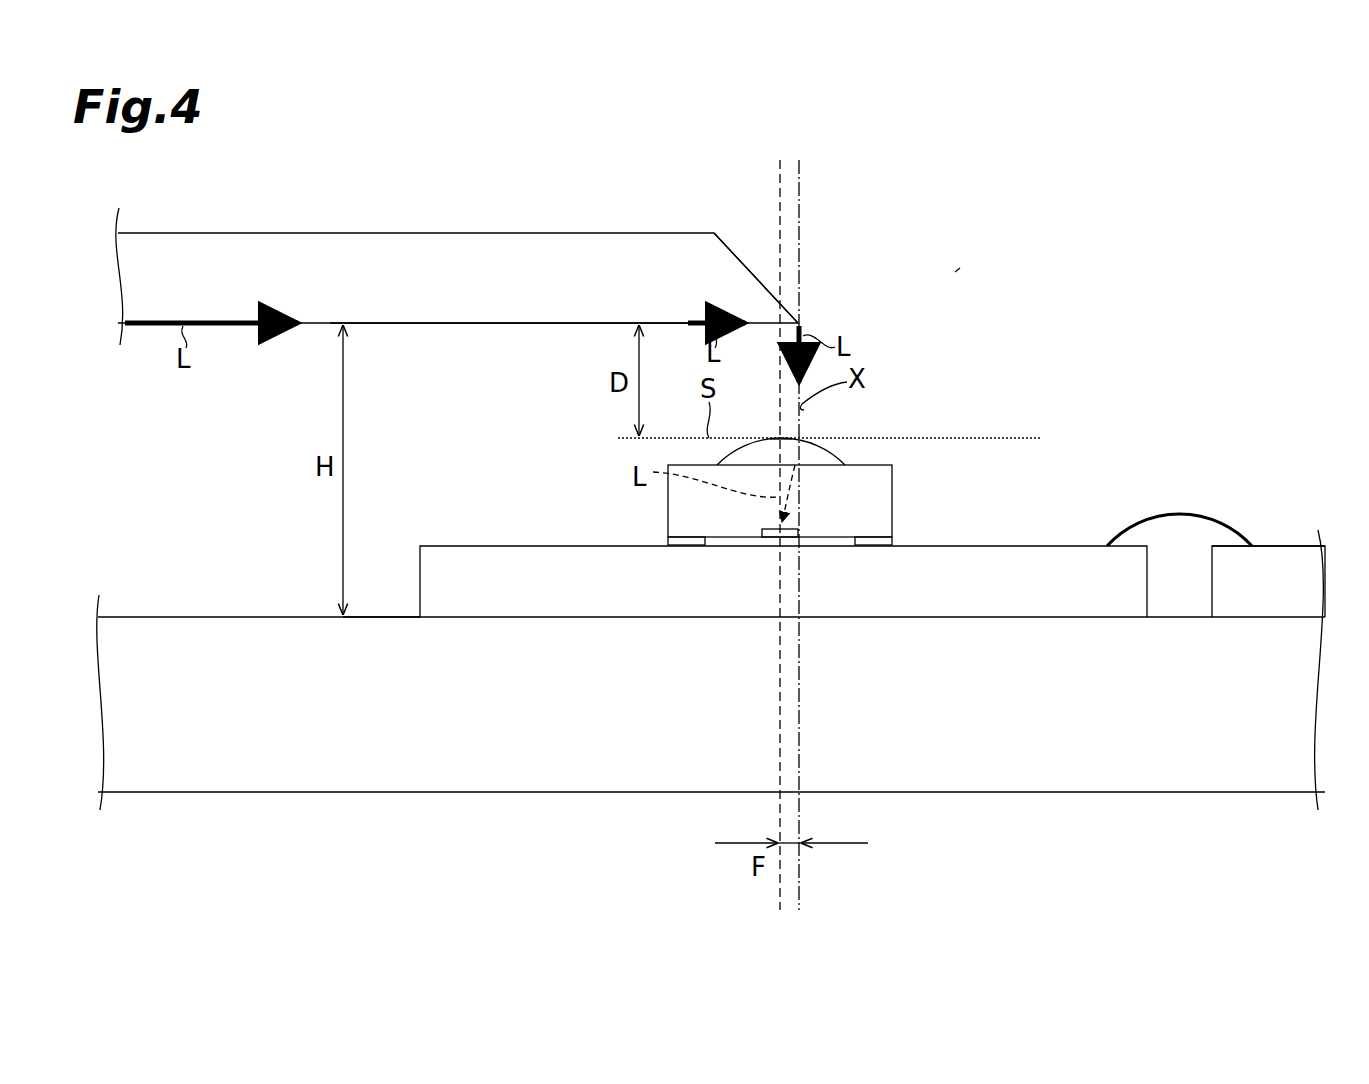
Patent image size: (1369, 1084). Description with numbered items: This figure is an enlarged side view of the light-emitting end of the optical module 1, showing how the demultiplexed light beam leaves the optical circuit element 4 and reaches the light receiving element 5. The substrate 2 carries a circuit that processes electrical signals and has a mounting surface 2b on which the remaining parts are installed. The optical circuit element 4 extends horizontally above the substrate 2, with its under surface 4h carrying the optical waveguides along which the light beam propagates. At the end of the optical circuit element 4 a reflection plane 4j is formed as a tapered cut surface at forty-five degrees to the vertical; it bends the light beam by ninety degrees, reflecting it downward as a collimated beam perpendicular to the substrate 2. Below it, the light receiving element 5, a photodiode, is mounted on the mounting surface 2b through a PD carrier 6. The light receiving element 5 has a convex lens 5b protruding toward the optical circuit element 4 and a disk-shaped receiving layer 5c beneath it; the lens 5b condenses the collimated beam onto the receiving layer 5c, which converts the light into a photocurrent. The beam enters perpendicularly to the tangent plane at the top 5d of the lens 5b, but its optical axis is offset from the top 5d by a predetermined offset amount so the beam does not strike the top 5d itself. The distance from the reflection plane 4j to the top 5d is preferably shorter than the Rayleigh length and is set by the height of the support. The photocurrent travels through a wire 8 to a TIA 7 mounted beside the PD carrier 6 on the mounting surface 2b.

The optical module 1 is at (962, 266).
The substrate 2 is at (1237, 752).
The mounting surface 2b is at (387, 617).
The optical circuit element 4 is at (528, 228).
The under surface 4h is at (573, 322).
The reflection plane 4j is at (760, 288).
The light receiving element 5 is at (861, 486).
The lens 5b is at (828, 449).
The receiving layer 5c is at (762, 533).
The top 5d is at (778, 433).
The PD carrier 6 is at (1043, 617).
The TIA 7 is at (1275, 546).
The wire 8 is at (1180, 515).